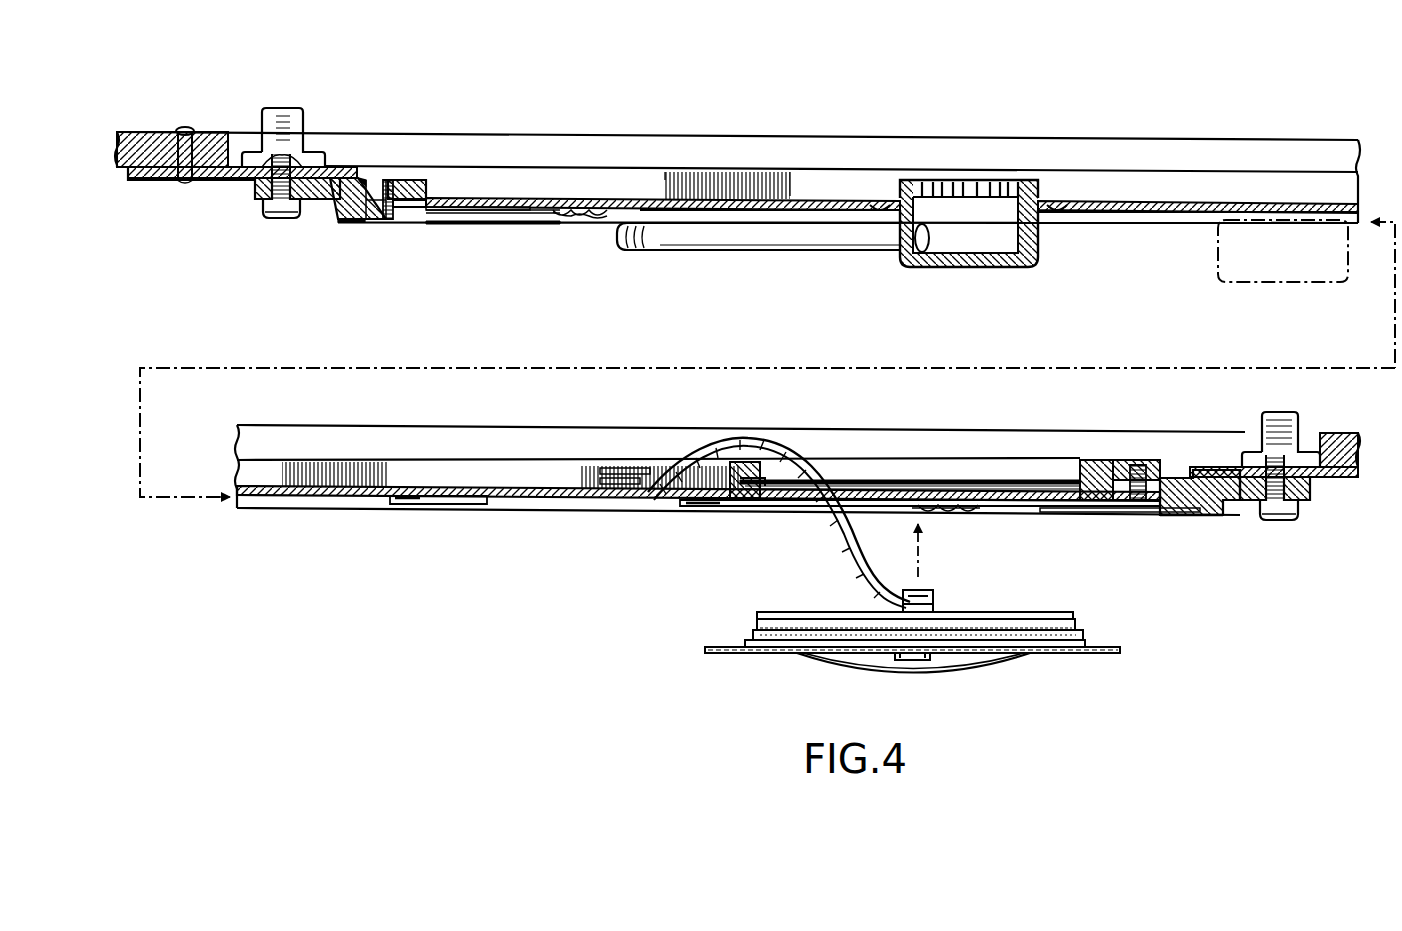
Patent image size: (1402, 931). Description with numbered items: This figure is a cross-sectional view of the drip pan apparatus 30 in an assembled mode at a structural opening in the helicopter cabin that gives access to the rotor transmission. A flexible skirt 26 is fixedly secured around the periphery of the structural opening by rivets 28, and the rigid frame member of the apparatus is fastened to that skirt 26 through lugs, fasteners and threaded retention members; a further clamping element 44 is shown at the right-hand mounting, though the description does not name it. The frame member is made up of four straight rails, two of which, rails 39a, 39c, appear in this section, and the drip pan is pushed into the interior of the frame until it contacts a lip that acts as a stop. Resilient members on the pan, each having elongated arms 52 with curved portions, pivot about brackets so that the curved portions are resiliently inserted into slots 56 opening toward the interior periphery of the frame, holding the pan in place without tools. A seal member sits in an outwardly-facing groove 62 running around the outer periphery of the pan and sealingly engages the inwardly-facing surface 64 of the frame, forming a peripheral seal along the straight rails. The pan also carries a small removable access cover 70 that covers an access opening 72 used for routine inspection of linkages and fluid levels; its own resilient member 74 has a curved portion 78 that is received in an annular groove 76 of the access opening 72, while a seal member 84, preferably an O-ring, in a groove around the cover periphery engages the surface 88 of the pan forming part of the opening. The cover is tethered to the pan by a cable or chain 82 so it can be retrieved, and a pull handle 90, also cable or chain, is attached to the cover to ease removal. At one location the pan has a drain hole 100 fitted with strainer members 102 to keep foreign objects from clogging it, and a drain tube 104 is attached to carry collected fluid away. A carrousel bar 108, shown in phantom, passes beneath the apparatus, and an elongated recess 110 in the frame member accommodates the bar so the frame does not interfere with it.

The flexible skirt 26 is at (206, 180).
The rivets 28 is at (185, 128).
The drip pan apparatus 30 is at (323, 530).
The straight side or rail 39a is at (1186, 516).
The straight side or rail 39c is at (348, 238).
The clamp plate 44 is at (1204, 466).
The elongated arms 52 is at (495, 214).
The slots 56 is at (372, 206).
The outwardly-facing groove 62 is at (414, 176).
The inwardly-facing surface 64 is at (363, 188).
The access cover 70 is at (1096, 624).
The access opening 72 is at (906, 462).
The resilient member 74 is at (748, 656).
The annular groove 76 is at (1060, 490).
The curved portion 78 is at (704, 650).
The cable or chain 82 is at (832, 548).
The seal member 84 is at (748, 630).
The surface 88 is at (982, 468).
The pull handles 90 is at (971, 661).
The drain hole 100 is at (1036, 186).
The strainer members 102 is at (974, 182).
The drain tube 104 is at (718, 240).
The carrousel bar 108 is at (1272, 280).
The elongated recesses 110 is at (1244, 222).